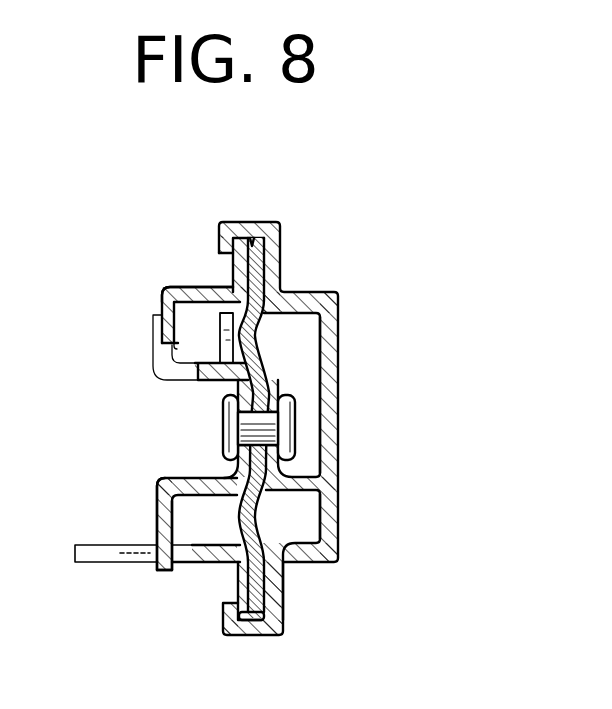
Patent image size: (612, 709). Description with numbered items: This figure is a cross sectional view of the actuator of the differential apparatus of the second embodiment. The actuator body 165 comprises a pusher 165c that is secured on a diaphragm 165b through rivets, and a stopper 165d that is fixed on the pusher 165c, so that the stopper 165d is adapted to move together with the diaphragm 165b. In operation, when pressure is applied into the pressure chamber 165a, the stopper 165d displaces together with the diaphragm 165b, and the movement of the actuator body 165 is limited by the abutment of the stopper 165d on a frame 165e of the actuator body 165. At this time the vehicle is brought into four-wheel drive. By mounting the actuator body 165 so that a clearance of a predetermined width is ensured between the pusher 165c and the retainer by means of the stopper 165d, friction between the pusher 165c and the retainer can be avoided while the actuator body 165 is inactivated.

The actuator body 165 is at (364, 279).
The pressure chamber 165a is at (310, 526).
The diaphragm 165b is at (257, 337).
The pusher 165c is at (157, 518).
The stopper 165d is at (220, 330).
The frame 165e is at (202, 288).